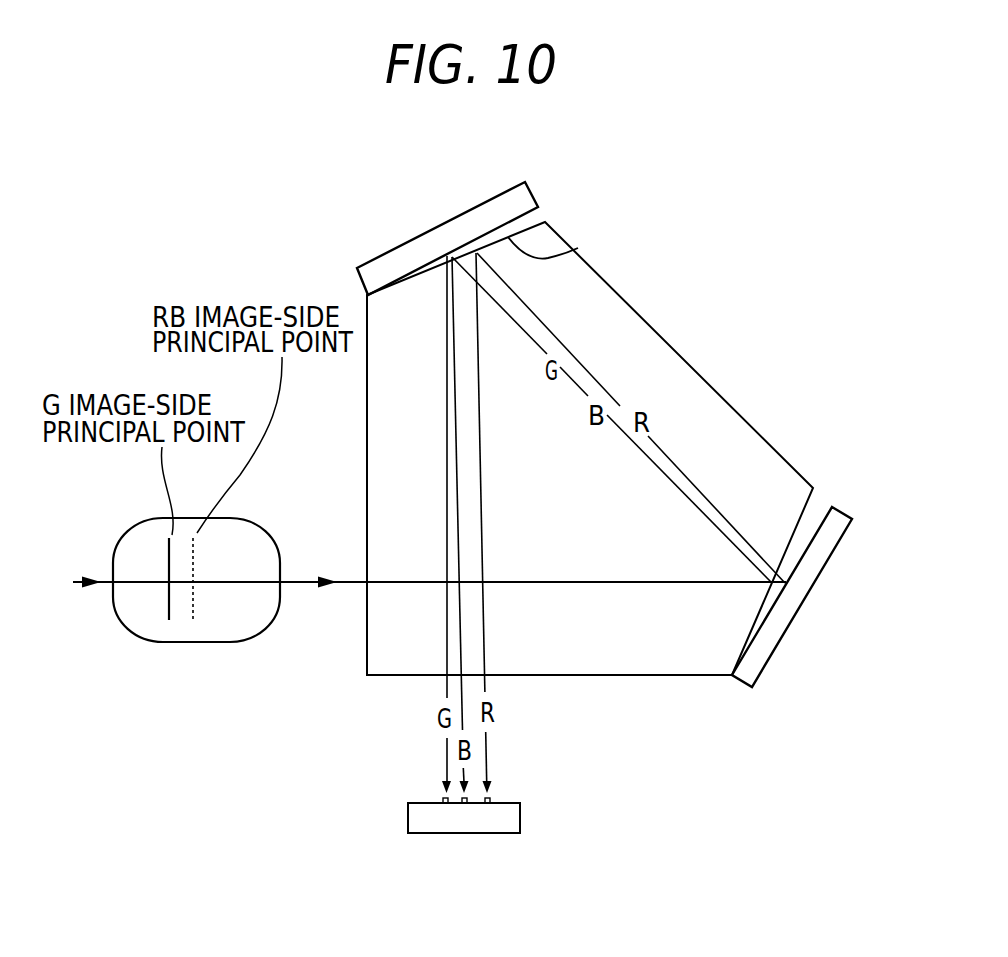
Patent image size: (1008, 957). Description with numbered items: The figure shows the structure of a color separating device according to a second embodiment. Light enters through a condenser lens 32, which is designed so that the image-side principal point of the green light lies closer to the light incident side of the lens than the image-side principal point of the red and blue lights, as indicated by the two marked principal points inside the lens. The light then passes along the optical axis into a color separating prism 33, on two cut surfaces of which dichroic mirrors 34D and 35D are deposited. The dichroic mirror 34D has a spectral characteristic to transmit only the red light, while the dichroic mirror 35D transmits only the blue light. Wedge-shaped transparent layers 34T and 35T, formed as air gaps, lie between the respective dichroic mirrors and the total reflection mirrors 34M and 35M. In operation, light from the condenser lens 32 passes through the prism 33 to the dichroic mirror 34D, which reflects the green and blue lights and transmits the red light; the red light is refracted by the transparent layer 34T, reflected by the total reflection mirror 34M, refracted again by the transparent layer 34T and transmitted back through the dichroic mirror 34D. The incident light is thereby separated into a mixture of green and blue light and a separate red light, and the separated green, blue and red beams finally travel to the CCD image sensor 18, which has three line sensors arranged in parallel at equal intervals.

The CCD image sensor 18 is at (510, 820).
The condenser lens 32 is at (217, 642).
The color separating prism 33 is at (618, 675).
The total reflection mirror 34M is at (788, 610).
The wedge-shaped transparent layer 34T is at (795, 548).
The dichroic mirror 34D is at (793, 527).
The total reflection mirror 35M is at (452, 232).
The wedge-shaped transparent layer 35T is at (508, 229).
The dichroic mirror 35D is at (578, 248).